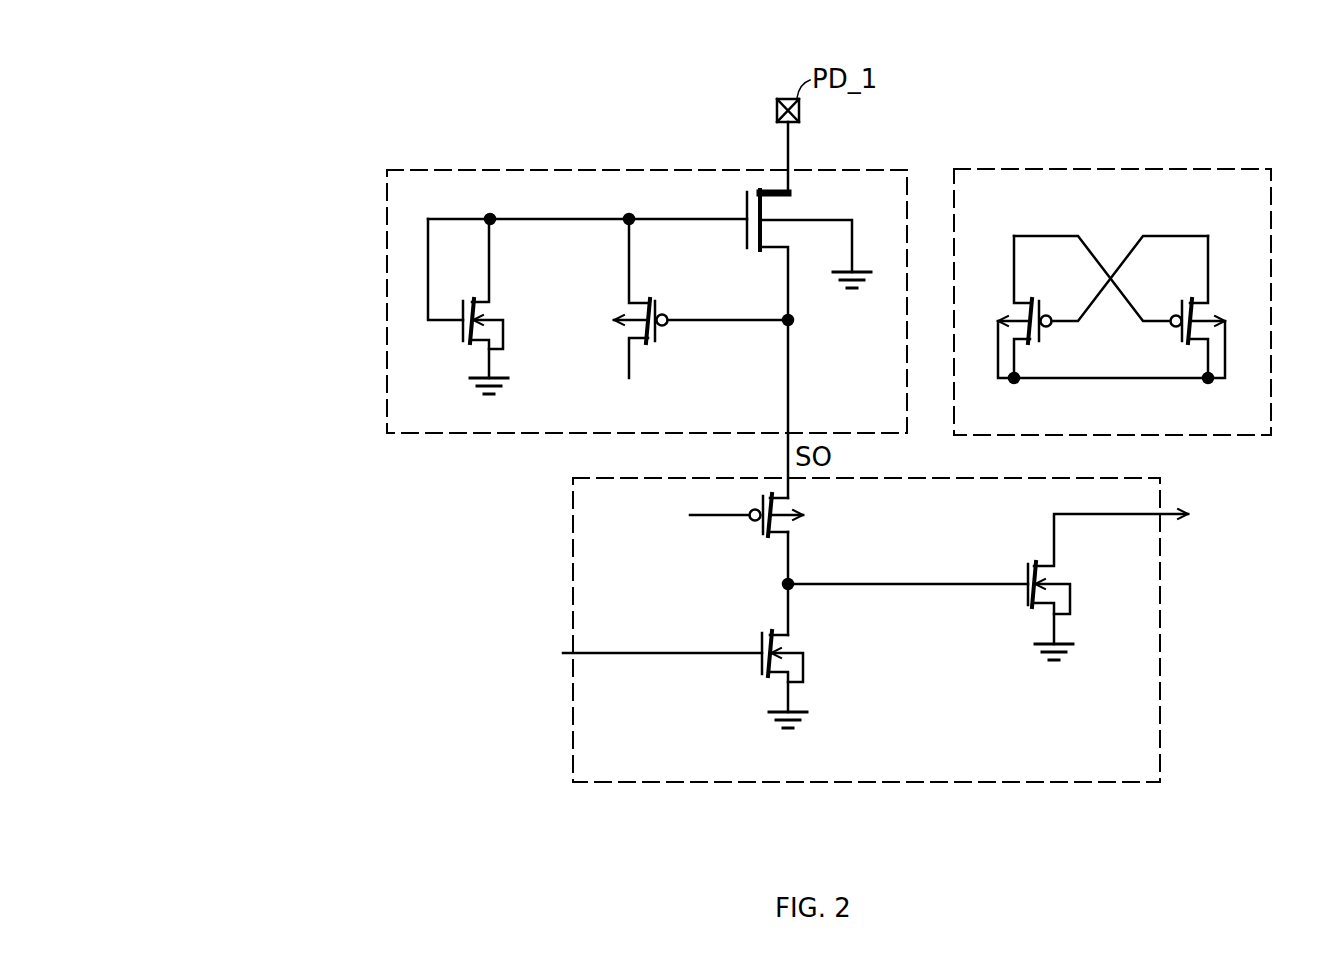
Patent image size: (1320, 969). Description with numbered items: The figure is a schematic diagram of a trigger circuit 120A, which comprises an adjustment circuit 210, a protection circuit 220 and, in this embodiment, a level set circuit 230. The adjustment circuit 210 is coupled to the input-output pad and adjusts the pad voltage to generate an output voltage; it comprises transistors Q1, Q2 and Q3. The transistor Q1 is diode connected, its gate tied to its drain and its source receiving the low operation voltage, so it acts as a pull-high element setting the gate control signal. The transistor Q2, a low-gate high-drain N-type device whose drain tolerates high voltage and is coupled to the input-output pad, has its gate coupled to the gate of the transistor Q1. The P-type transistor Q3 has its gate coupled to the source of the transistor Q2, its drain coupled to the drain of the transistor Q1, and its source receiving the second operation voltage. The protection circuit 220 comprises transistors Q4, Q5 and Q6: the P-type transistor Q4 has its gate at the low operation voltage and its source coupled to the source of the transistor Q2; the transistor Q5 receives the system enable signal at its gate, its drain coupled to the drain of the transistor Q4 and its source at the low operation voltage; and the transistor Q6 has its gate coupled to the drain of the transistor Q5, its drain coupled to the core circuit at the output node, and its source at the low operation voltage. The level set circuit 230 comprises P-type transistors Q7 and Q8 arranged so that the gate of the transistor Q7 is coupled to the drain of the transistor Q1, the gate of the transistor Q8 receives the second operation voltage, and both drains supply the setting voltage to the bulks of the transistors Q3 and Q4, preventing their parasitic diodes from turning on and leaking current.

The trigger circuit 120A is at (236, 57).
The adjustment circuit 210 is at (412, 170).
The protection circuit 220 is at (601, 478).
The level set circuit 230 is at (982, 169).
The transistor Q1 is at (502, 321).
The transistor Q2 is at (813, 339).
The transistor Q3 is at (681, 316).
The transistor Q4 is at (735, 533).
The transistor Q5 is at (629, 680).
The transistor Q6 is at (1131, 595).
The transistor Q7 is at (1027, 307).
The transistor Q8 is at (1194, 307).